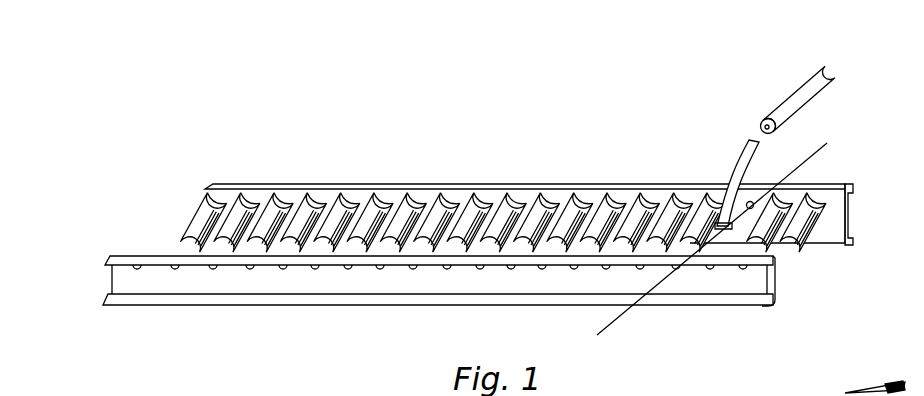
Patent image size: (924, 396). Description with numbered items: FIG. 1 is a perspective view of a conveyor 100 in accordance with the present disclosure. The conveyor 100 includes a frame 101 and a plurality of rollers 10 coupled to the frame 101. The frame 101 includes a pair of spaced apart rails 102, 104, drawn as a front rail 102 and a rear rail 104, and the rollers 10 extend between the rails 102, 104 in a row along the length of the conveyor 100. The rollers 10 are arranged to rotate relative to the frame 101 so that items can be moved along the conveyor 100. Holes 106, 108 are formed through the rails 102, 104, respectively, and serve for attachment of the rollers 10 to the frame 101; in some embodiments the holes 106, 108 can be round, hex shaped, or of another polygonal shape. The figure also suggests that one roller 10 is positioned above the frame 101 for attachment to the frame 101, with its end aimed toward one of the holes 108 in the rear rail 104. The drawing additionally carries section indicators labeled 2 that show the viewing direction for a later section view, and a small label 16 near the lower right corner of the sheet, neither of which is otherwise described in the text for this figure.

The conveyor 100 is at (101, 75).
The frame 101 is at (136, 129).
The rail 102 is at (108, 257).
The rail 104 is at (205, 187).
The holes 106 is at (684, 281).
The holes 108 is at (757, 205).
The roller 10 is at (777, 89).
The section line for FIG. 2 is at (570, 330).
The sensor 16 is at (845, 393).